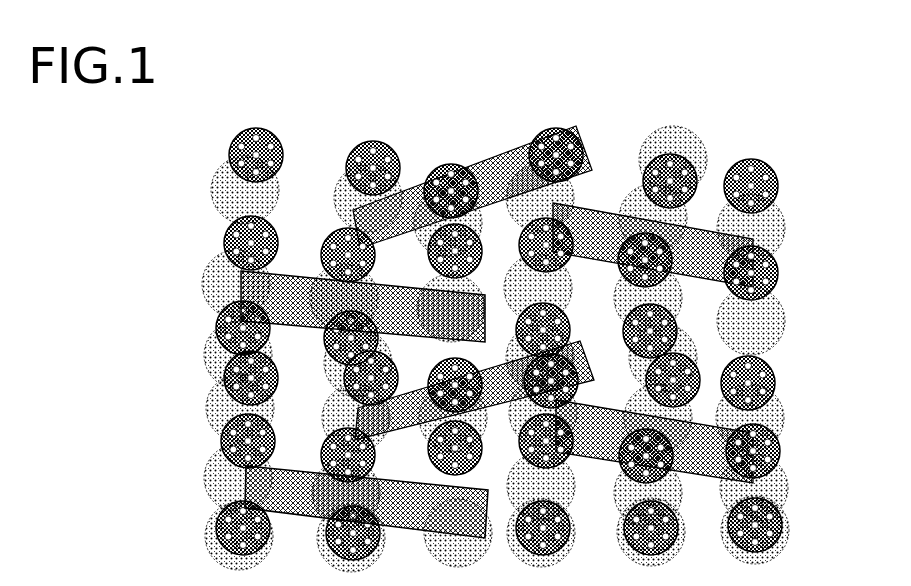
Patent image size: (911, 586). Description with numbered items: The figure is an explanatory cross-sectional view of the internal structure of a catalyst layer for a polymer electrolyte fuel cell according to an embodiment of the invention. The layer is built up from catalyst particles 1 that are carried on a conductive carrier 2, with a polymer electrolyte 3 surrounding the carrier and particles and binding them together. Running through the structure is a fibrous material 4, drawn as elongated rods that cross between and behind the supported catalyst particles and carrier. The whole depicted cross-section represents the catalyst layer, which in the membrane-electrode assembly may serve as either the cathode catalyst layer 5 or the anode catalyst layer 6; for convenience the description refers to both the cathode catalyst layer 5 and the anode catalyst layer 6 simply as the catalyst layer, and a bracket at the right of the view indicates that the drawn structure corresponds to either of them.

The catalyst particles 1 is at (244, 131).
The conductive carrier 2 is at (263, 127).
The polymer electrolyte 3 is at (204, 202).
The fibrous material 4 is at (238, 479).
The cathode catalyst layer 5 is at (525, 326).
The anode catalyst layer 6 is at (525, 326).